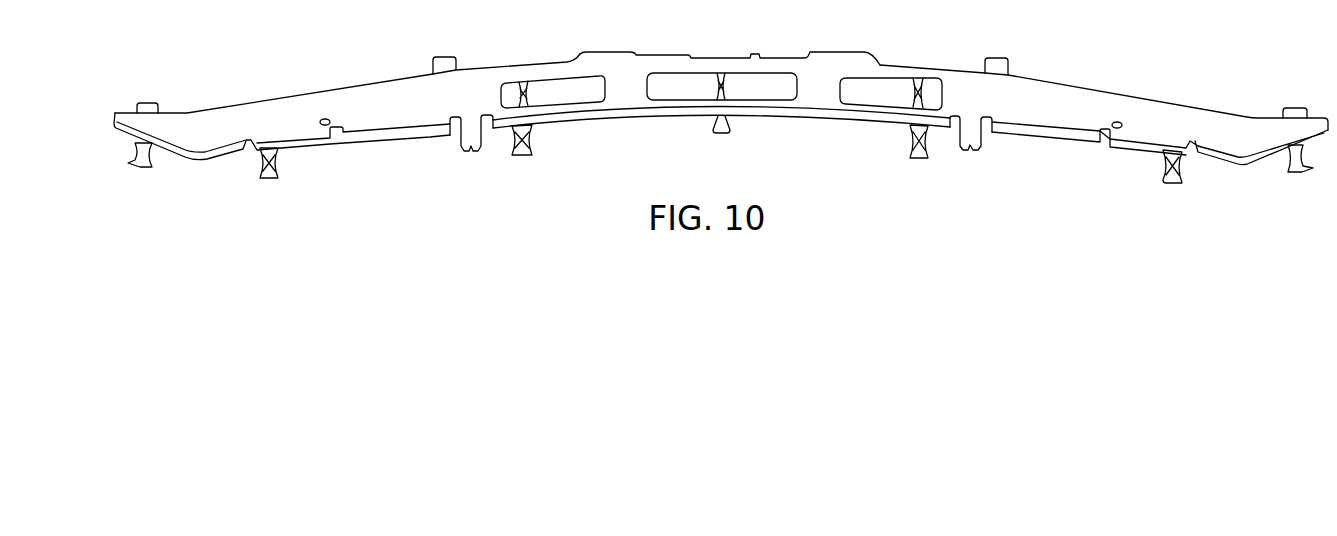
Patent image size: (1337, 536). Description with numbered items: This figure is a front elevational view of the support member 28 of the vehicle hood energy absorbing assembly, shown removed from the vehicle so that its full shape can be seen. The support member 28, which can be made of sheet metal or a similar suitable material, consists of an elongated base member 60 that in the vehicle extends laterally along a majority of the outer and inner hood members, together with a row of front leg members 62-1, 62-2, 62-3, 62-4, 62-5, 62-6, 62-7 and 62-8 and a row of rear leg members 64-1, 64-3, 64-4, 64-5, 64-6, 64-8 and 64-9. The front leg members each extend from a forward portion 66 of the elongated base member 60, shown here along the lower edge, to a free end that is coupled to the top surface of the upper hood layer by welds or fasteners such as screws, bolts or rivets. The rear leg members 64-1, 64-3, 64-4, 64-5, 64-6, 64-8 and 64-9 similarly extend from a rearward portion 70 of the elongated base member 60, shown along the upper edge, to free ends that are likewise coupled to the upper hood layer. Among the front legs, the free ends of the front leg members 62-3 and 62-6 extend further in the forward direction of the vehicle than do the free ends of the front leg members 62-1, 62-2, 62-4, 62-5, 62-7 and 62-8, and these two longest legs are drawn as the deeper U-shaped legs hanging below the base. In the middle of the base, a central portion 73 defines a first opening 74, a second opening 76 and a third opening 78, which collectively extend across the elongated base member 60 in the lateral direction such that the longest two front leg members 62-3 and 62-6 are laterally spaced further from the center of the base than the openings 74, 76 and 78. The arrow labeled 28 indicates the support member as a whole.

The support member 28 is at (1147, 59).
The elongated base member 60 is at (958, 90).
The front leg member 62-1 is at (1296, 170).
The front leg member 62-2 is at (1175, 178).
The front leg member 62-3 is at (972, 148).
The front leg member 62-4 is at (918, 152).
The front leg member 62-5 is at (523, 150).
The front leg member 62-6 is at (468, 148).
The front leg member 62-7 is at (268, 172).
The front leg member 62-8 is at (143, 166).
The rear leg member 64-1 is at (1296, 108).
The rear leg member 64-3 is at (1000, 58).
The rear leg member 64-4 is at (917, 87).
The rear leg member 64-5 is at (715, 87).
The rear leg member 64-6 is at (517, 84).
The rear leg member 64-8 is at (447, 57).
The rear leg member 64-9 is at (147, 102).
The forward portion 66 is at (630, 118).
The rearward portion 70 is at (358, 83).
The central portion 73 is at (822, 73).
The first opening 74 is at (892, 90).
The second opening 76 is at (770, 86).
The third opening 78 is at (552, 88).